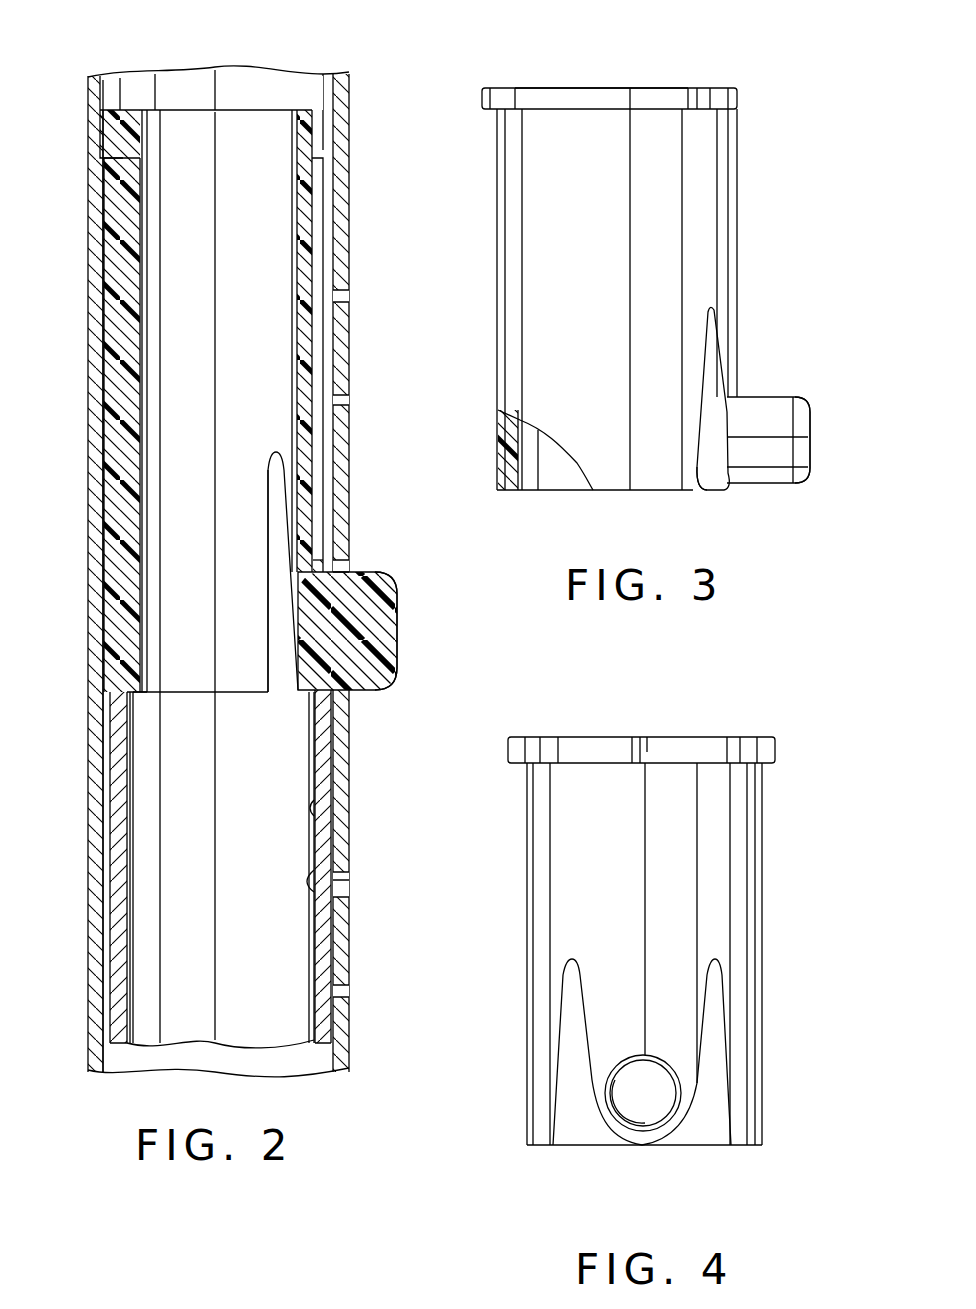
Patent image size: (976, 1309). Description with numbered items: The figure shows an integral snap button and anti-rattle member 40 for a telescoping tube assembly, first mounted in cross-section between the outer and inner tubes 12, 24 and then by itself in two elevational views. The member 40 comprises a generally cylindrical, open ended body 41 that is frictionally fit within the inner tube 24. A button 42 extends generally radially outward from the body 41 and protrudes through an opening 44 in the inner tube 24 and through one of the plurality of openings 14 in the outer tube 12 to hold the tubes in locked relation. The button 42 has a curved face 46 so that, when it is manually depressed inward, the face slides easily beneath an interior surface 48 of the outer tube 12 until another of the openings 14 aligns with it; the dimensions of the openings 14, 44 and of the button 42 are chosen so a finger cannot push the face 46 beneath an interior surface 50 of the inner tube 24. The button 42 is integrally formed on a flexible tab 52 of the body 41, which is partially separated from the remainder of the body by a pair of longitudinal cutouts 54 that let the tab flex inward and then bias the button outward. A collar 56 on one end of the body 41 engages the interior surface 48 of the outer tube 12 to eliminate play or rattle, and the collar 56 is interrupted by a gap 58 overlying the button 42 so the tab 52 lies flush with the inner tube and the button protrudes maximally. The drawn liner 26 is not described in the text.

In FIG. 2, the outer tube 12 is at (92, 890).
In FIG. 2, the openings 14 is at (342, 342).
In FIG. 2, the inner tube 24 is at (104, 1008).
In FIG. 2, the liner 26 is at (320, 168).
In FIG. 2, the integral snap button and anti-rattle member 40 is at (194, 106).
In FIG. 3, the integral snap button and anti-rattle member 40 is at (566, 84).
In FIG. 4, the integral snap button and anti-rattle member 40 is at (566, 735).
In FIG. 2, the body 41 is at (242, 108).
In FIG. 3, the body 41 is at (684, 222).
In FIG. 4, the body 41 is at (572, 914).
In FIG. 2, the button 42 is at (372, 622).
In FIG. 3, the button 42 is at (776, 460).
In FIG. 4, the button 42 is at (657, 1093).
In FIG. 2, the opening 44 is at (315, 562).
In FIG. 2, the curved face 46 is at (397, 662).
In FIG. 3, the curved face 46 is at (810, 402).
In FIG. 2, the interior surface 48 is at (318, 808).
In FIG. 2, the interior surface 50 is at (310, 880).
In FIG. 2, the flexible tab 52 is at (284, 580).
In FIG. 3, the flexible tab 52 is at (722, 478).
In FIG. 4, the flexible tab 52 is at (654, 1040).
In FIG. 2, the cutouts 54 is at (285, 664).
In FIG. 3, the cutouts 54 is at (699, 492).
In FIG. 4, the cutouts 54 is at (562, 968).
In FIG. 2, the collar 56 is at (125, 137).
In FIG. 3, the collar 56 is at (612, 92).
In FIG. 2, the gap 58 is at (310, 128).
In FIG. 3, the gap 58 is at (740, 96).
In FIG. 4, the gap 58 is at (662, 752).